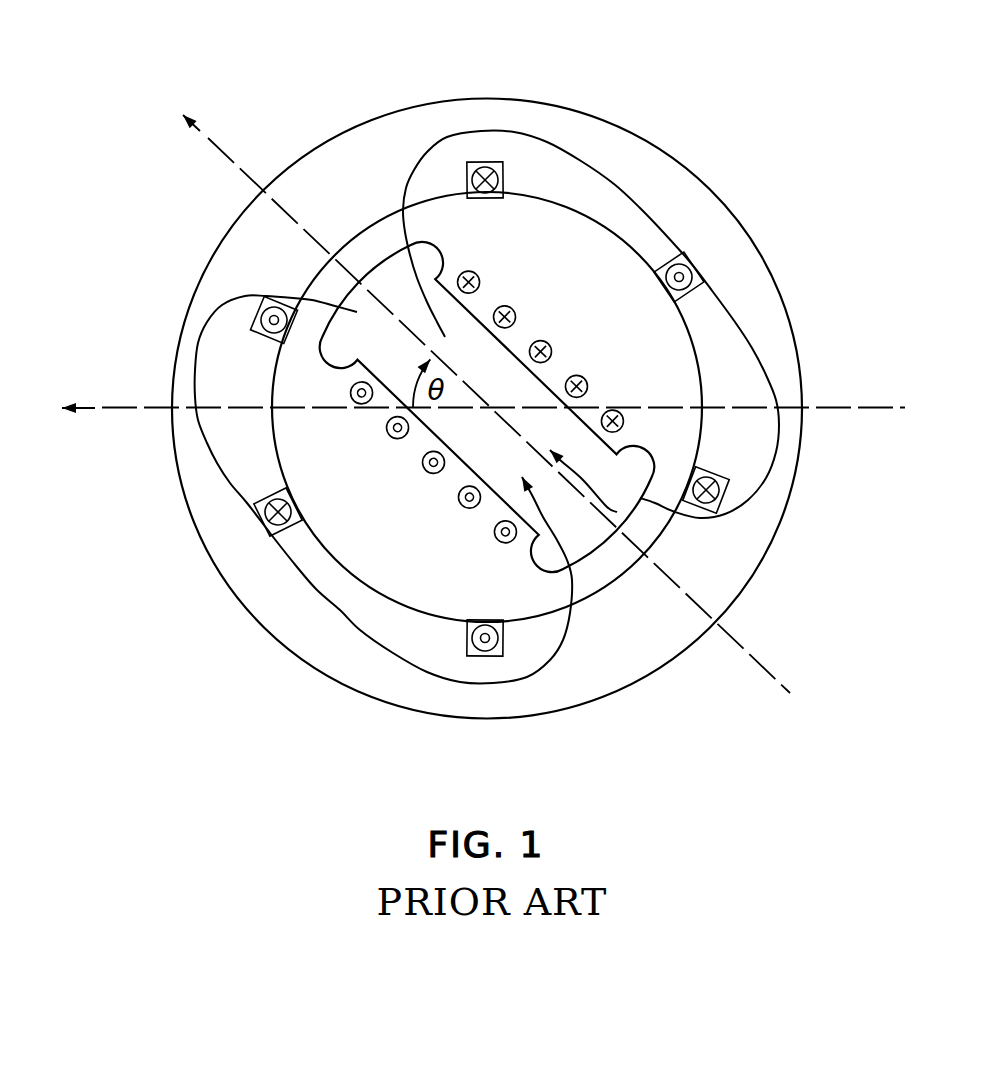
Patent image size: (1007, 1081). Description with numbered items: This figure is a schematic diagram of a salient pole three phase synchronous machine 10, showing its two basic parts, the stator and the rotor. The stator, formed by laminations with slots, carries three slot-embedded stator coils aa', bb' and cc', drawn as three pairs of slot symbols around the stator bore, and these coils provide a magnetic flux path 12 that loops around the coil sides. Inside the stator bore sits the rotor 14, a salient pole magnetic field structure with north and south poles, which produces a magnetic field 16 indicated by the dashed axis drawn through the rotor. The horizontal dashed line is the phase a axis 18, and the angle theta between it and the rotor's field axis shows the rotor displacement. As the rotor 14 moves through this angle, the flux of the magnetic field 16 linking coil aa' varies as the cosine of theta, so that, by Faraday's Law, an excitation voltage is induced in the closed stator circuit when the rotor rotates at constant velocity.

The salient pole three phase synchronous machine 10 is at (344, 100).
The magnetic flux path 12 is at (627, 176).
The rotor 14 is at (617, 512).
The magnetic field 16 is at (790, 693).
The phase a axis 18 is at (845, 405).